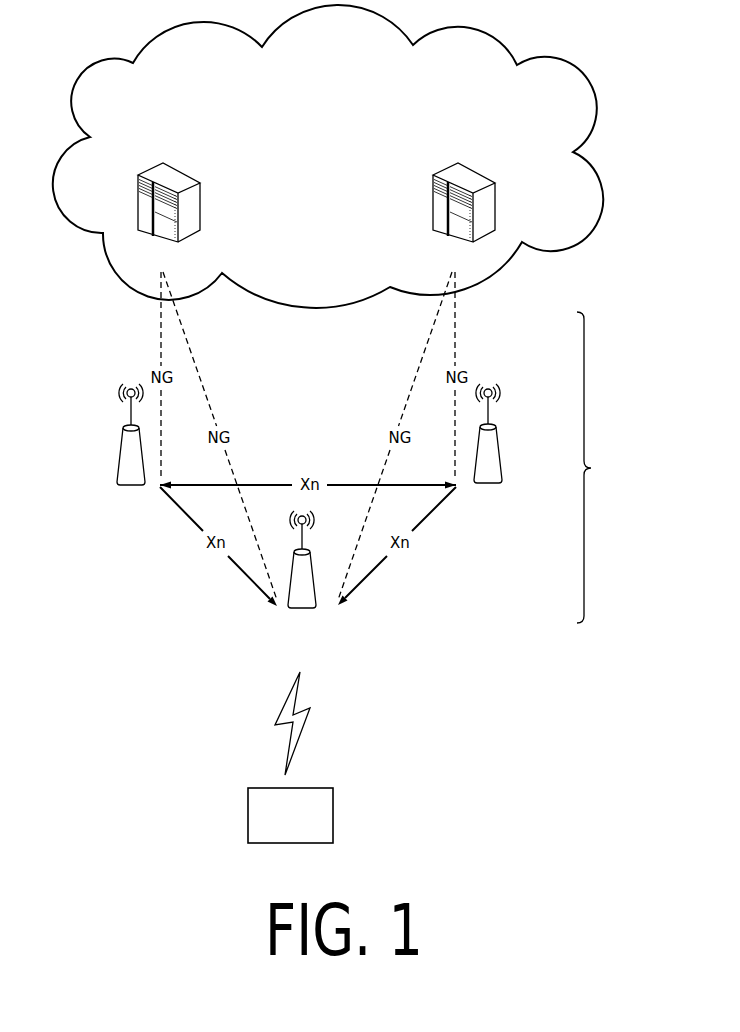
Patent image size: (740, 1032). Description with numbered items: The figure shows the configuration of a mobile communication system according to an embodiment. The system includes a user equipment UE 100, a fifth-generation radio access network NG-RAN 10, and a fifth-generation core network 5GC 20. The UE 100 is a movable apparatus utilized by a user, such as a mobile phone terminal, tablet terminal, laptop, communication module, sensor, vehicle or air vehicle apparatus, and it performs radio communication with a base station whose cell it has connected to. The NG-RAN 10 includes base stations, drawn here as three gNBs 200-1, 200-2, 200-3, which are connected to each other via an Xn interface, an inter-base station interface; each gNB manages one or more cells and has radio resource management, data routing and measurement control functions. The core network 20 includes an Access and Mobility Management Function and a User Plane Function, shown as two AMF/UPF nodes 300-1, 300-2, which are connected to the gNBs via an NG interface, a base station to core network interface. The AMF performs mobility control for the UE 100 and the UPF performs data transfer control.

The 5G core network (5GC) 20 is at (498, 37).
The AMF/UPF 300-1 is at (193, 177).
The AMF/UPF 300-2 is at (474, 176).
The gNB 200-1 is at (120, 456).
The gNB 200-2 is at (316, 590).
The gNB 200-3 is at (499, 440).
The NG-RAN 10 is at (617, 467).
The UE 100 is at (334, 817).